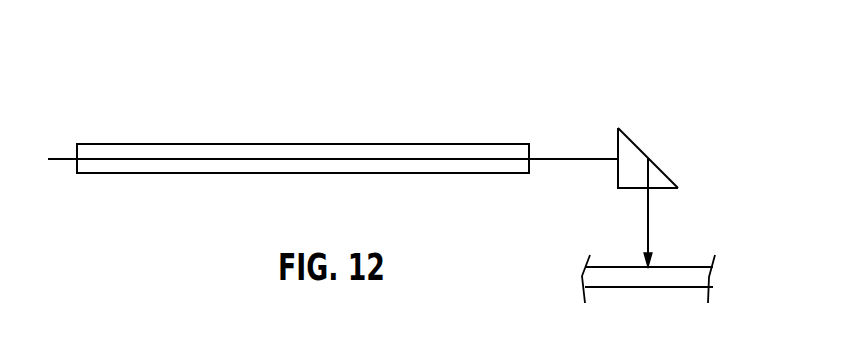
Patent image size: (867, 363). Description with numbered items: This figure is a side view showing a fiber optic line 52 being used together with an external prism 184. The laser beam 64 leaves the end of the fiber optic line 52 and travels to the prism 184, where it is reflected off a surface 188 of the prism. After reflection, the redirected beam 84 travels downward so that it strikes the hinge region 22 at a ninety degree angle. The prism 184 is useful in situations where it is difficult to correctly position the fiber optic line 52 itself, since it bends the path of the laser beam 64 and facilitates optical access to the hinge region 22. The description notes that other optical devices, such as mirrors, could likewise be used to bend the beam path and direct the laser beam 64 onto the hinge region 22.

The fiber optic line 52 is at (182, 143).
The laser beam 64 is at (562, 160).
The external prism 184 is at (618, 147).
The surface 188 is at (657, 168).
The deflected beam (light path 70) 84 is at (648, 230).
The hinge region 22 is at (653, 287).